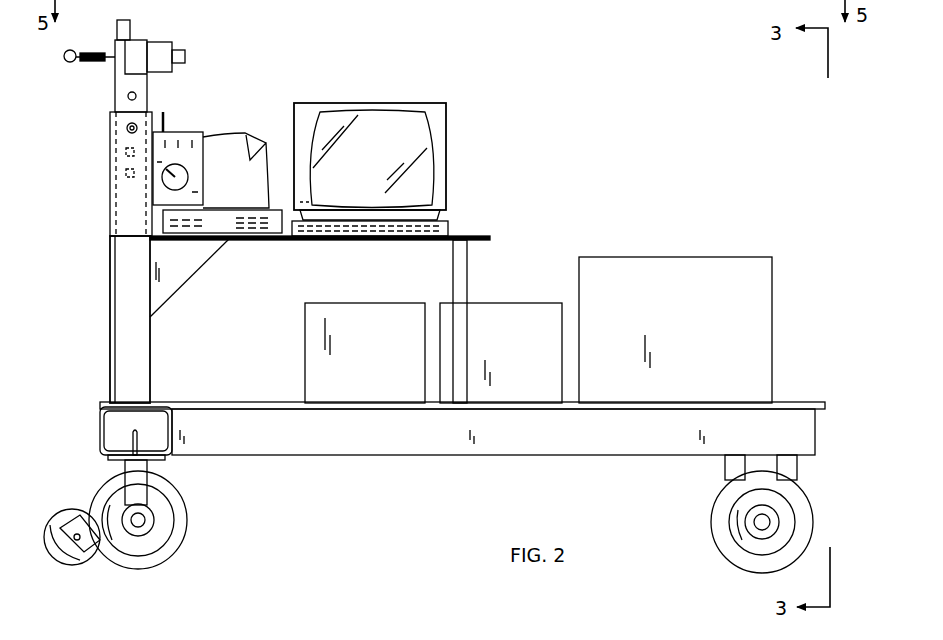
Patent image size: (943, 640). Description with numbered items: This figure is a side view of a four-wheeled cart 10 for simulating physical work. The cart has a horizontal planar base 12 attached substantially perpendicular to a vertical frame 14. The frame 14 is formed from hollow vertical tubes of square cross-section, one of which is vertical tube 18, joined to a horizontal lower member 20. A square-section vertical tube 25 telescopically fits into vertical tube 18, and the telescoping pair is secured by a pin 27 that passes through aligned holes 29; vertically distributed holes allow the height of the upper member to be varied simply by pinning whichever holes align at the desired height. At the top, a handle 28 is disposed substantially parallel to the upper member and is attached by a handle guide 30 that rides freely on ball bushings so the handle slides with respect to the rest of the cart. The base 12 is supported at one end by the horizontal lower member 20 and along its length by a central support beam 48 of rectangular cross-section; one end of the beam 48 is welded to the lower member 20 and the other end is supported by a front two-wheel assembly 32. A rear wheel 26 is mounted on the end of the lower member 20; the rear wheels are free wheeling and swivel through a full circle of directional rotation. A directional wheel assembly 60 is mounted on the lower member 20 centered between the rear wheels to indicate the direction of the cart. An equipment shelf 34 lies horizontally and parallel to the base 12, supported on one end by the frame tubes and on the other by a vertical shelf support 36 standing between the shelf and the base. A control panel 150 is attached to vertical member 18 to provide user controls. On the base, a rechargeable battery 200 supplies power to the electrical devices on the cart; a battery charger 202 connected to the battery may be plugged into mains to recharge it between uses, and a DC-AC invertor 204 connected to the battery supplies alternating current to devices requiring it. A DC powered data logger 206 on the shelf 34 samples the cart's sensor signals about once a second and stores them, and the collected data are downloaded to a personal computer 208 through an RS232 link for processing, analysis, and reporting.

The four-wheeled cart 10 is at (602, 126).
The horizontal planar base 12 is at (192, 402).
The vertical frame 14 is at (96, 262).
The vertical tube 18 is at (120, 318).
The horizontal lower member 20 is at (100, 425).
The vertical tube 25 is at (135, 188).
The rear wheel 26 is at (138, 568).
The pin 27 is at (127, 131).
The handle 28 is at (66, 62).
The aligned holes 29 is at (118, 164).
The handle guide 30 is at (177, 42).
The front two-wheel assembly 32 is at (700, 478).
The equipment shelf 34 is at (472, 235).
The vertical shelf support 36 is at (470, 262).
The central support beam 48 is at (380, 455).
The directional wheel assembly 60 is at (45, 560).
The control panel 150 is at (195, 158).
The rechargeable battery 200 is at (680, 272).
The battery charger 202 is at (505, 320).
The DC-AC invertor 204 is at (367, 310).
The DC powered data logger 206 is at (244, 233).
The personal computer 208 is at (448, 135).